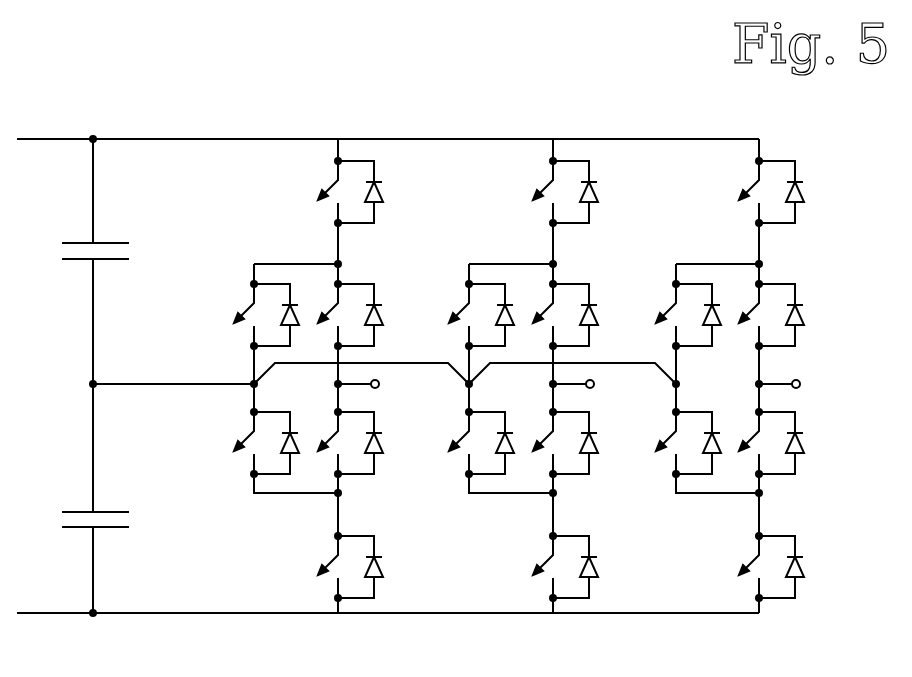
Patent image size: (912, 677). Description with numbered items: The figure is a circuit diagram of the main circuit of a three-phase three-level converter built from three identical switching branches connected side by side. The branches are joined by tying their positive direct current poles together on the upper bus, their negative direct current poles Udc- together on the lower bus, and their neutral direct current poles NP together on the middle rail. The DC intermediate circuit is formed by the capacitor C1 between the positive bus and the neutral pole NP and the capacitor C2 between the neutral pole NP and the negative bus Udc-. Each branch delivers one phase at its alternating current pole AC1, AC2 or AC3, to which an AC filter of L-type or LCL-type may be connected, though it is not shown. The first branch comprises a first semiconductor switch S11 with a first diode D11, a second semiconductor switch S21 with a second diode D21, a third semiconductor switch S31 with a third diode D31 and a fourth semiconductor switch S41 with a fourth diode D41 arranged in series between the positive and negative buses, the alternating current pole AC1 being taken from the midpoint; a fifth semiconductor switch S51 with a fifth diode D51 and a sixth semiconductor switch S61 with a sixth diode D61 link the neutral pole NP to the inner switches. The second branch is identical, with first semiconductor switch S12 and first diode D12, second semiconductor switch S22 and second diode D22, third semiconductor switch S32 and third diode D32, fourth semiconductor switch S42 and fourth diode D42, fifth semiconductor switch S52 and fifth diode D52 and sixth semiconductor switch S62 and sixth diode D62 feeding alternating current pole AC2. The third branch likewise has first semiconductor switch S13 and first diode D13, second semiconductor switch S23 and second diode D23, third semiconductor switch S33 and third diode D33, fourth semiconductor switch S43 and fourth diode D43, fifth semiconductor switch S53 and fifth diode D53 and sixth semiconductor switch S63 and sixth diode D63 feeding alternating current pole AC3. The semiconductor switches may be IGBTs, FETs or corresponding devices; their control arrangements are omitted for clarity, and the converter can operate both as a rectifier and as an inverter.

The negative direct current pole Udc- is at (388, 633).
The neutral direct current pole NP is at (350, 380).
The capacitor C1 is at (75, 261).
The capacitor C2 is at (75, 498).
The alternating current pole AC1 is at (382, 385).
The alternating current pole AC2 is at (597, 385).
The alternating current pole AC3 is at (803, 385).
The first semiconductor switch S11 is at (318, 192).
The first diode D11 is at (378, 192).
The second semiconductor switch S21 is at (320, 316).
The second diode D21 is at (378, 315).
The third semiconductor switch S31 is at (320, 444).
The third diode D31 is at (378, 443).
The fourth semiconductor switch S41 is at (318, 567).
The fourth diode D41 is at (378, 567).
The fifth semiconductor switch S51 is at (234, 315).
The fifth diode D51 is at (294, 315).
The sixth semiconductor switch S61 is at (234, 443).
The sixth diode D61 is at (294, 443).
The first semiconductor switch S12 is at (533, 192).
The first diode D12 is at (593, 192).
The second semiconductor switch S22 is at (535, 316).
The second diode D22 is at (593, 315).
The third semiconductor switch S32 is at (535, 444).
The third diode D32 is at (593, 443).
The fourth semiconductor switch S42 is at (533, 567).
The fourth diode D42 is at (593, 567).
The fifth semiconductor switch S52 is at (449, 315).
The fifth diode D52 is at (509, 315).
The sixth semiconductor switch S62 is at (449, 443).
The sixth diode D62 is at (509, 443).
The first semiconductor switch S13 is at (739, 192).
The first diode D13 is at (799, 192).
The second semiconductor switch S23 is at (741, 316).
The second diode D23 is at (799, 315).
The third semiconductor switch S33 is at (741, 444).
The third diode D33 is at (799, 443).
The fourth semiconductor switch S43 is at (739, 567).
The fourth diode D43 is at (799, 567).
The fifth semiconductor switch S53 is at (656, 315).
The fifth diode D53 is at (716, 315).
The sixth semiconductor switch S63 is at (656, 443).
The sixth diode D63 is at (716, 443).